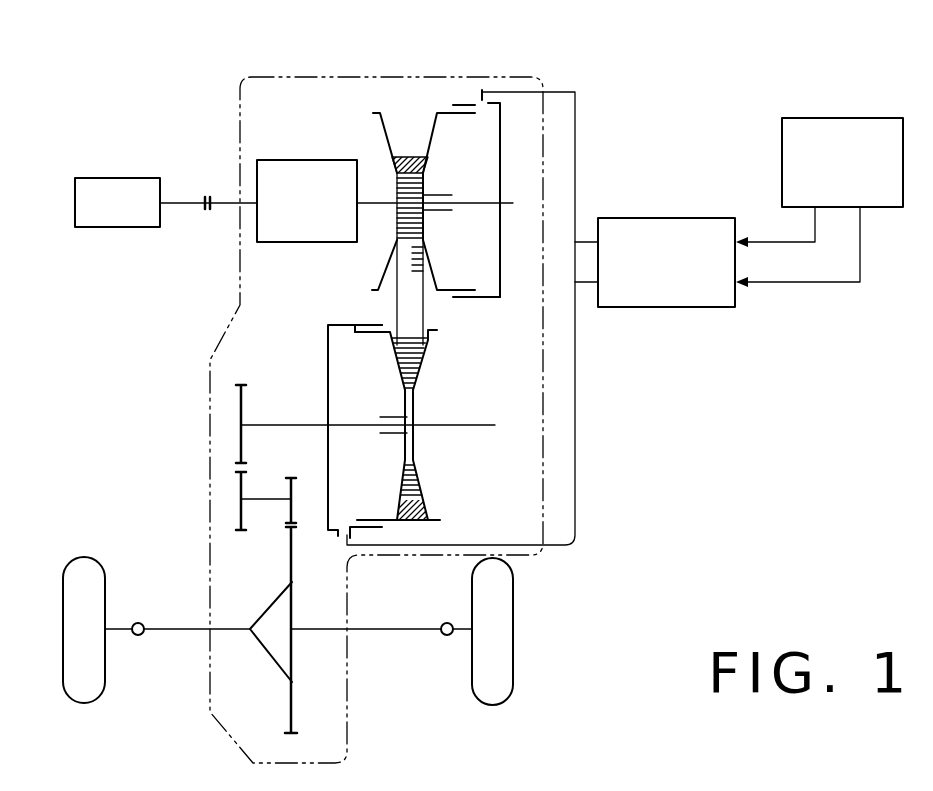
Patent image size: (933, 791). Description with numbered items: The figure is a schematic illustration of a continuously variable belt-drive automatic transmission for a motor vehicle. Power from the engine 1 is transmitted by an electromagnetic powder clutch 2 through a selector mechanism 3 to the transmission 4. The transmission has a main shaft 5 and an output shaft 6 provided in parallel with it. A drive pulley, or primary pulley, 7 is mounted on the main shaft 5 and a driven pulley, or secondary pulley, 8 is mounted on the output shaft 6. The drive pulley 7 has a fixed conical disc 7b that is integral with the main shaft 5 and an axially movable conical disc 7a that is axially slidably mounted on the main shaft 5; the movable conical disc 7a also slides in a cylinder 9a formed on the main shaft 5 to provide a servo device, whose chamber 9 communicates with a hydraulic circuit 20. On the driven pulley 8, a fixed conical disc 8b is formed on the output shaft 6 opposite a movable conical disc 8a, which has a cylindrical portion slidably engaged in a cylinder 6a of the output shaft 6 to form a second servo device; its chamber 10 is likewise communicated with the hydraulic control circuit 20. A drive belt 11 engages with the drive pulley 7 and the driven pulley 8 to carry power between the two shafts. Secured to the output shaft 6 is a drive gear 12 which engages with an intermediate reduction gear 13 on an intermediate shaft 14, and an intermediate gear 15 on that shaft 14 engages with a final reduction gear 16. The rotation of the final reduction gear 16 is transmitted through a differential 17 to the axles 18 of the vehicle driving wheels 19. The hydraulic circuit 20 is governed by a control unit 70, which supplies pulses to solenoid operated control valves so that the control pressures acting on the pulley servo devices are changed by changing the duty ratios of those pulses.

The engine 1 is at (126, 176).
The electromagnetic powder clutch 2 is at (210, 194).
The selector mechanism 3 is at (316, 160).
The transmission 4 is at (417, 110).
The main shaft 5 is at (369, 204).
The output shaft 6 is at (291, 424).
The cylinder of the output shaft 6a is at (352, 321).
The drive pulley 7 is at (410, 153).
The movable conical disc 7a is at (443, 112).
The fixed conical disc 7b is at (379, 135).
The driven pulley 8 is at (419, 425).
The movable conical disc 8a is at (397, 340).
The fixed conical disc 8b is at (425, 366).
The chamber 9 is at (484, 160).
The cylinder 9a is at (485, 299).
The chamber 10 is at (333, 358).
The drive belt 11 is at (413, 512).
The drive gear 12 is at (242, 382).
The intermediate reduction gear 13 is at (241, 532).
The intermediate shaft 14 is at (268, 498).
The intermediate gear 15 is at (291, 478).
The final reduction gear 16 is at (294, 740).
The differential 17 is at (277, 612).
The axles 18 is at (123, 633).
The driving wheels 19 is at (100, 585).
The hydraulic circuit 20 is at (663, 308).
The control unit 70 is at (820, 117).